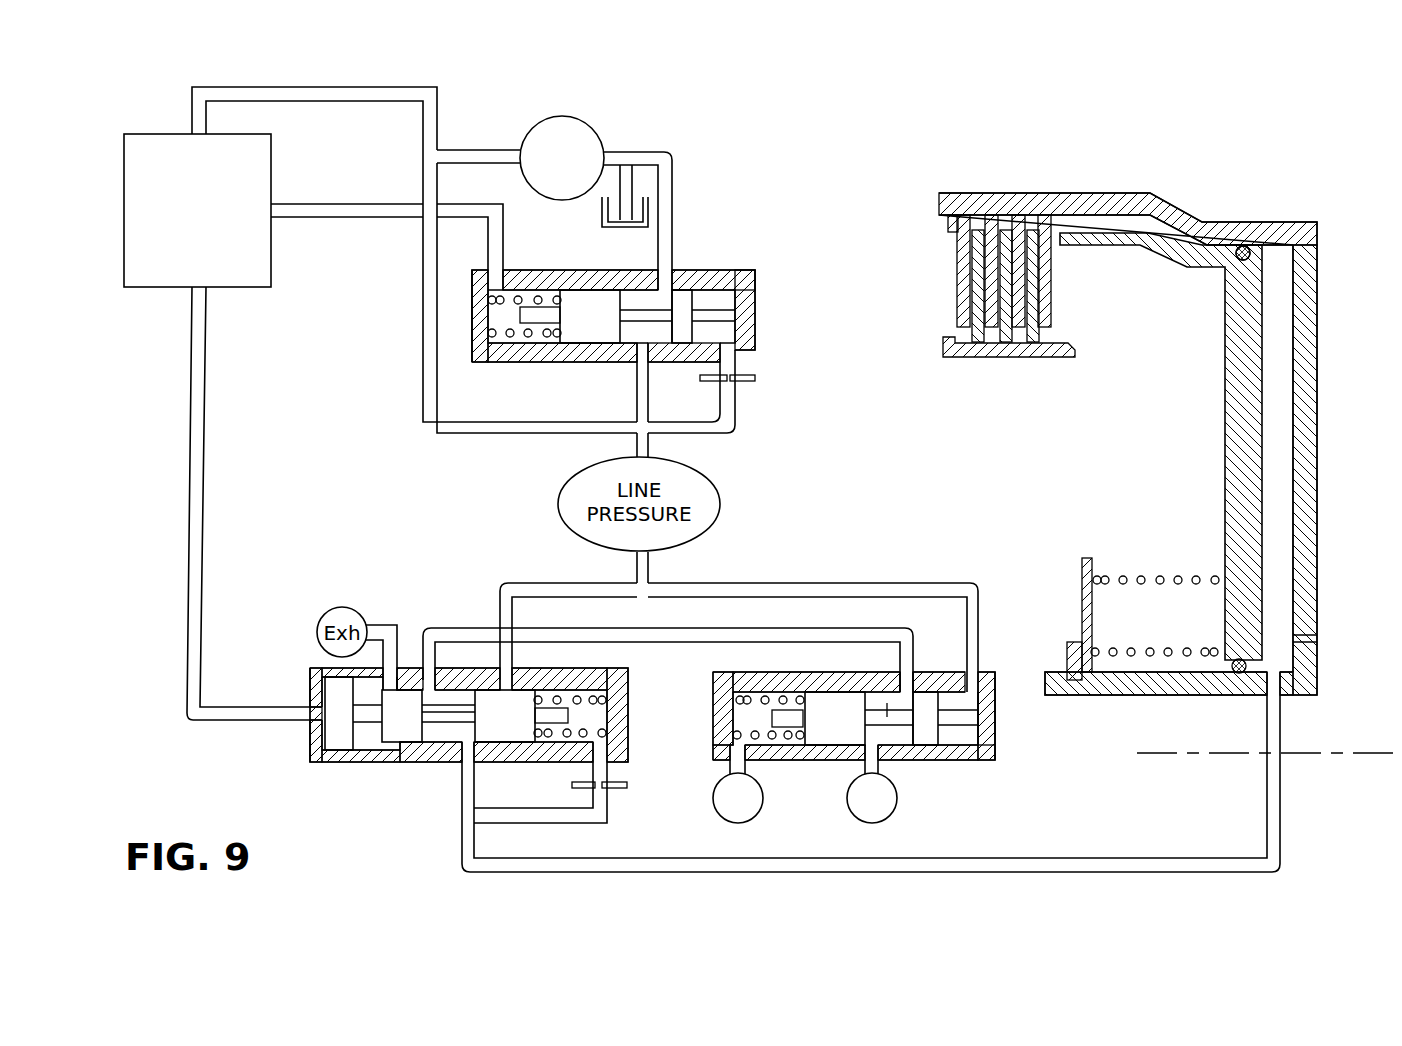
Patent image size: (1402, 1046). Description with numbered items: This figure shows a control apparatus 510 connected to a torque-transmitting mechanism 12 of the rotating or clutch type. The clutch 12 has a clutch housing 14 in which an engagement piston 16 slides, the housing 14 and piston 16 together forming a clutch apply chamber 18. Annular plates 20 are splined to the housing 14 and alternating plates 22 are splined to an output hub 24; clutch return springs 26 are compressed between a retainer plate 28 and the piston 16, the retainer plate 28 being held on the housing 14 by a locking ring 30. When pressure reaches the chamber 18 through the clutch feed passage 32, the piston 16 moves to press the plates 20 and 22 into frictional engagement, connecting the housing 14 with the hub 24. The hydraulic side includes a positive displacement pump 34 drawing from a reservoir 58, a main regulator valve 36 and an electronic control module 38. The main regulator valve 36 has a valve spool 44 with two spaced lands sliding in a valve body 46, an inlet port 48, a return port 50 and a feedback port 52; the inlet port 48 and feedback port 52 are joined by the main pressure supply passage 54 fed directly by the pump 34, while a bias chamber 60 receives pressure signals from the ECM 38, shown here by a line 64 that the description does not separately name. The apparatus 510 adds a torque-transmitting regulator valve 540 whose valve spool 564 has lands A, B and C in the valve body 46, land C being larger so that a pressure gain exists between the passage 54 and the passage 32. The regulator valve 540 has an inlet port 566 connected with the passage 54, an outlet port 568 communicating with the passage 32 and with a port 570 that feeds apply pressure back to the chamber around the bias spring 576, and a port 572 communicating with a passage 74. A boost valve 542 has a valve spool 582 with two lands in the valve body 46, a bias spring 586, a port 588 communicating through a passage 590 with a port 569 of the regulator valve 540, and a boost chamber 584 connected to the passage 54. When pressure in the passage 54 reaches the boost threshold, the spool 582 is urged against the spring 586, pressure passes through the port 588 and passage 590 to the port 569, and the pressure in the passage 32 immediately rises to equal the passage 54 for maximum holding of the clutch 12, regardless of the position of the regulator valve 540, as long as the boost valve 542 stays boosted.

The torque-transmitting mechanism 12 is at (1258, 198).
The clutch housing 14 is at (1305, 245).
The engagement piston 16 is at (1240, 352).
The clutch apply chamber 18 is at (1280, 425).
The annular plates 20 is at (1045, 214).
The plates 22 is at (1030, 343).
The output hub 24 is at (945, 348).
The clutch return springs 26 is at (1140, 575).
The retainer plate 28 is at (1085, 580).
The locking ring 30 is at (1072, 660).
The clutch feed passage 32 is at (610, 873).
The positive displacement pump 34 is at (531, 118).
The main regulator valve 36 is at (684, 266).
The electronic control module 38 is at (160, 128).
The valve spool 44 is at (536, 318).
The valve body 46 is at (720, 280).
The inlet port 48 is at (632, 384).
The return port 50 is at (660, 286).
The feedback port 52 is at (727, 356).
The main pressure supply passage 54 is at (423, 311).
The reservoir 58 is at (638, 200).
The bias chamber 60 is at (510, 336).
The control signal line 64 is at (322, 203).
The passage 74 is at (187, 446).
The control apparatus 510 is at (742, 188).
The torque-transmitting regulator valve 540 is at (448, 762).
The boost valve 542 is at (823, 776).
The valve spool 564 is at (445, 716).
The inlet port 566 is at (505, 680).
The outlet port 568 is at (462, 830).
The port 569 is at (430, 680).
The port 570 is at (600, 762).
The port 572 is at (310, 715).
The bias spring 576 is at (582, 735).
The valve spool 582 is at (887, 703).
The boost chamber 584 is at (985, 752).
The bias spring 586 is at (740, 710).
The port 588 is at (910, 672).
The passage 590 is at (788, 628).